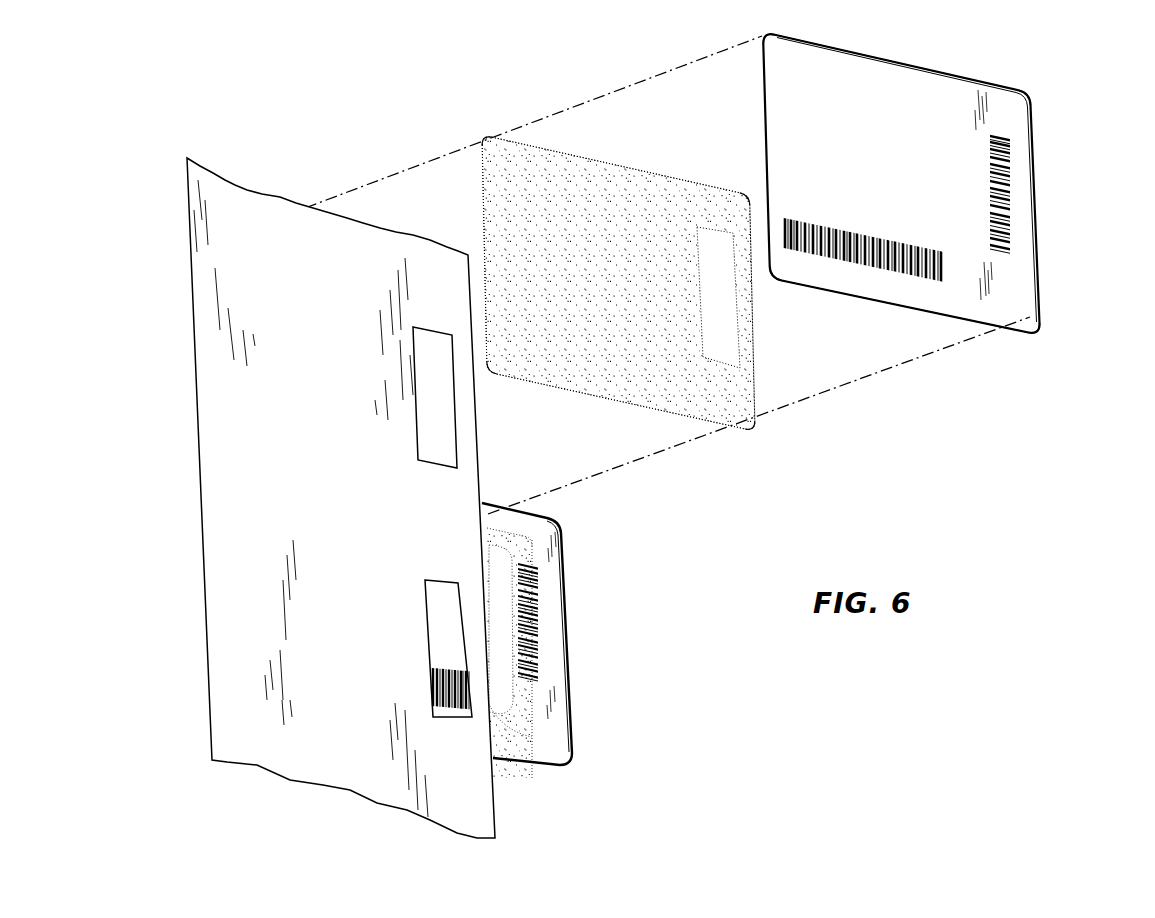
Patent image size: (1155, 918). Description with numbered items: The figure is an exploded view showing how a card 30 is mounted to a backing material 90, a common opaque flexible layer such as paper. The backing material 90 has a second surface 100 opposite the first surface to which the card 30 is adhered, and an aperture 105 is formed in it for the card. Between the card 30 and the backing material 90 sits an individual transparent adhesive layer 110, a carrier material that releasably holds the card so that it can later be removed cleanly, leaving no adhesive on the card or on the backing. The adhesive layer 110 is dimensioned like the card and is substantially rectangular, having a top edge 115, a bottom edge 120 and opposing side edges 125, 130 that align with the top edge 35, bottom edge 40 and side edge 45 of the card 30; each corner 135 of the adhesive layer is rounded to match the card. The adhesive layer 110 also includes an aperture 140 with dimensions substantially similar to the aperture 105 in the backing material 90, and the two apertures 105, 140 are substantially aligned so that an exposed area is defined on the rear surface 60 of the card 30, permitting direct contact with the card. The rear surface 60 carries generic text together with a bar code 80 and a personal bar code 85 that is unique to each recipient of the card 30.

The card 30 is at (578, 632).
The top edge 35 is at (952, 75).
The bottom edge 40 is at (935, 313).
The side edge 45 is at (758, 62).
The rear surface 60 is at (868, 74).
The bar code 80 is at (878, 267).
The personal bar code 85 is at (1015, 178).
The backing material 90 is at (210, 695).
The second surface 100 is at (238, 386).
The aperture 105 is at (438, 466).
The adhesive layer 110 is at (594, 151).
The top edge 115 is at (648, 172).
The bottom edge 120 is at (633, 413).
The side edge 125 is at (757, 357).
The side edge 130 is at (480, 220).
The corner 135 is at (482, 133).
The aperture 140 is at (740, 305).